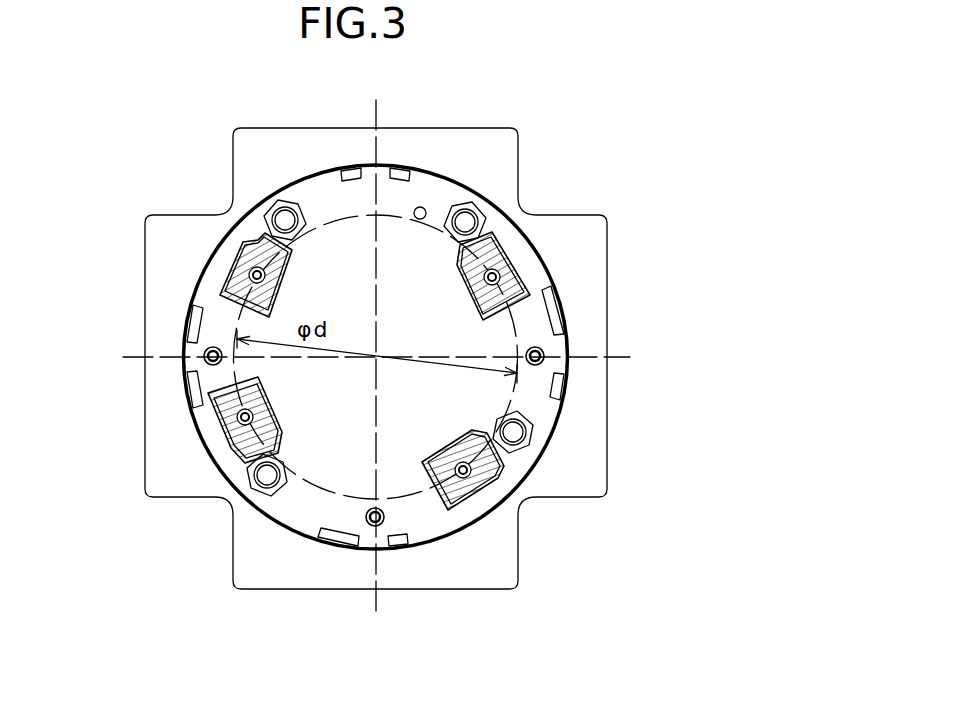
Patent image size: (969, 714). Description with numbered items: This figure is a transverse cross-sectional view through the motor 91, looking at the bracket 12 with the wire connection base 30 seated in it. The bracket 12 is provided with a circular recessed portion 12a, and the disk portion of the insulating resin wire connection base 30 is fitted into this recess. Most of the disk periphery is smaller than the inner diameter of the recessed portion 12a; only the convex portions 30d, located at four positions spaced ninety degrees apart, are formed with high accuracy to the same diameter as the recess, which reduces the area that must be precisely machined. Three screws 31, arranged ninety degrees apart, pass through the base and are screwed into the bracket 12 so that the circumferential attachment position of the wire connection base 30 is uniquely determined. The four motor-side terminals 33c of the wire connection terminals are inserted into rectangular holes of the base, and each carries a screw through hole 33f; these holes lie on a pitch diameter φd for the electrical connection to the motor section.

The bracket 12 is at (452, 128).
The circular recessed portion 12a is at (554, 312).
The wire connection base 30 is at (348, 248).
The convex portions 30d is at (388, 165).
The screws 31 is at (207, 355).
The motor-side terminal 33c is at (536, 213).
The screw through hole 33f is at (492, 233).
The motor 91 is at (552, 118).